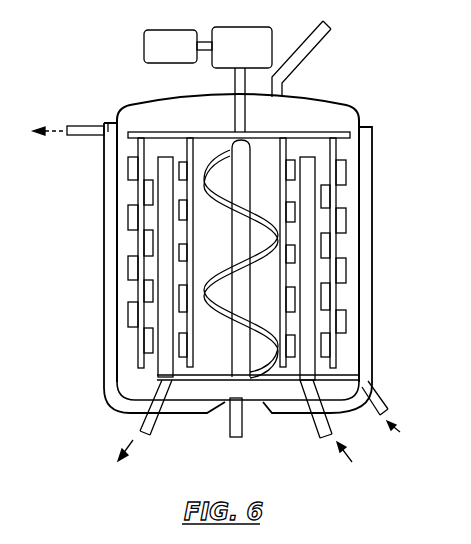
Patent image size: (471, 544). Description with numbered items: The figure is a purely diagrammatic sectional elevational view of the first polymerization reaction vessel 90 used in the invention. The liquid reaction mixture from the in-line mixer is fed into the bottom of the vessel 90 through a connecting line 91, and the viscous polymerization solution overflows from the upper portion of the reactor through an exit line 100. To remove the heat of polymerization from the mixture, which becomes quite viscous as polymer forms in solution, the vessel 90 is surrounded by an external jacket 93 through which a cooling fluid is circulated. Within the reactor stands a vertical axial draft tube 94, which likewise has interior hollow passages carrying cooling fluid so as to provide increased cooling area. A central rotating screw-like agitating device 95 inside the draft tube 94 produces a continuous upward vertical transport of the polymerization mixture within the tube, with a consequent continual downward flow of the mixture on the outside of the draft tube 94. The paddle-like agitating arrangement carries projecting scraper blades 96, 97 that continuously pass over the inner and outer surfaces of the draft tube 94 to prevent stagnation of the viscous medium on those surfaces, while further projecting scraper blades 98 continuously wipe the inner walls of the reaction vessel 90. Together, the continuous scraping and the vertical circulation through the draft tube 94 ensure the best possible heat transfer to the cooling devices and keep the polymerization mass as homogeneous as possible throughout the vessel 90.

The first polymerization vessel 90 is at (344, 108).
The connecting line 91 is at (230, 430).
The external jacket 93 is at (373, 243).
The vertical axial draft tube 94 is at (162, 268).
The central rotating screw-like agitating device 95 is at (222, 278).
The projecting scraper blade 96 is at (184, 162).
The projecting scraper blade 97 is at (147, 190).
The projecting scraper blades 98 is at (346, 172).
The exit line 100 is at (318, 42).